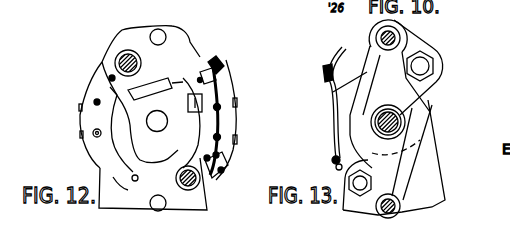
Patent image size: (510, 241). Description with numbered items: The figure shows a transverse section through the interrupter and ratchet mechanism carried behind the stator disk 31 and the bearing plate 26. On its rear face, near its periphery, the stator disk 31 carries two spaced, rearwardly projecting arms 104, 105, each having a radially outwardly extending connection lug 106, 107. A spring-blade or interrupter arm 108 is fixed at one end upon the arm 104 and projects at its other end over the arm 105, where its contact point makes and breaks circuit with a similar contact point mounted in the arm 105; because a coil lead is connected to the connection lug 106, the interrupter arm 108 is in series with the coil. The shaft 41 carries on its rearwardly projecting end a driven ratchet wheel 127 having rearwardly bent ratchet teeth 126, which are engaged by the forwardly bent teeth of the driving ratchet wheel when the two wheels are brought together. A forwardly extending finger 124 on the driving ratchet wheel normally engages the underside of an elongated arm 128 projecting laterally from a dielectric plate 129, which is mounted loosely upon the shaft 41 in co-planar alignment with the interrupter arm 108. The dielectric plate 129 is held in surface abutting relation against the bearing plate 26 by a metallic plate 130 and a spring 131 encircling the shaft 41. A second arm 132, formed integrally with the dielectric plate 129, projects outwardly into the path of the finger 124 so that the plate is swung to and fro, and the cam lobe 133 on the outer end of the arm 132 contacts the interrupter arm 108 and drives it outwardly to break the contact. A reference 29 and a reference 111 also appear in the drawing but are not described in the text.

In FIG. 12, the bearing plate 26 is at (207, 207).
In FIG. 13, the bearing plate 26 is at (449, 178).
In FIG. 13, the screw 29 is at (413, 36).
In FIG. 12, the stator disk 31 is at (200, 33).
In FIG. 12, the shaft 41 is at (93, 82).
In FIG. 13, the shaft 41 is at (405, 123).
In FIG. 12, the arm 104 is at (224, 160).
In FIG. 13, the arm 104 is at (336, 167).
In FIG. 12, the arm 105 is at (210, 62).
In FIG. 13, the arm 105 is at (337, 66).
In FIG. 12, the connection lug 106 is at (213, 176).
In FIG. 12, the connection lug 107 is at (218, 71).
In FIG. 12, the interrupter arm 108 is at (221, 84).
In FIG. 13, the interrupter arm 108 is at (330, 119).
In FIG. 12, the screw boss 111 is at (115, 50).
In FIG. 12, the finger 124 is at (237, 102).
In FIG. 13, the finger 124 is at (348, 115).
In FIG. 12, the ratchet teeth 126 is at (135, 140).
In FIG. 12, the driven ratchet wheel 127 is at (138, 95).
In FIG. 12, the elongated arm 128 is at (213, 57).
In FIG. 13, the elongated arm 128 is at (365, 86).
In FIG. 13, the dielectric plate 129 is at (372, 85).
In FIG. 13, the metallic plate 130 is at (417, 153).
In FIG. 13, the spring 131 is at (412, 110).
In FIG. 12, the second arm 132 is at (237, 127).
In FIG. 13, the second arm 132 is at (334, 160).
In FIG. 12, the cam lobe 133 is at (267, 81).
In FIG. 13, the cam lobe 133 is at (328, 90).